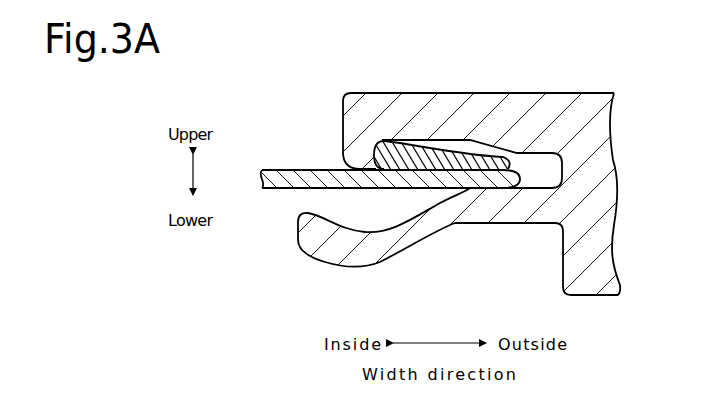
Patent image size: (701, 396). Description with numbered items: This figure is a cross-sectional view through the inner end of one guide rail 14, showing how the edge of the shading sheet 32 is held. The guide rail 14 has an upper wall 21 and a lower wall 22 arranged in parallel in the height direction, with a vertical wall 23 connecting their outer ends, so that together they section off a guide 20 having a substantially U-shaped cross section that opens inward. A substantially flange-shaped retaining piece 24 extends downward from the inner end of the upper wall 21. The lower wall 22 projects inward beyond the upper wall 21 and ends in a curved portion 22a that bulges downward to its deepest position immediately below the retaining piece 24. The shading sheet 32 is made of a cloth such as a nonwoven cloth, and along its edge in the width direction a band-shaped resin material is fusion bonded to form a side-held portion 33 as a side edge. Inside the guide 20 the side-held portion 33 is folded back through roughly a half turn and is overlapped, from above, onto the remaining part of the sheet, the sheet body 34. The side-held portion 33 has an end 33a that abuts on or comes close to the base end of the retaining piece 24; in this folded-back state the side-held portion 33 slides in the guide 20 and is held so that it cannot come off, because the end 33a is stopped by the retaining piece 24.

The guide rail 14 is at (569, 90).
The guide 20 is at (613, 128).
The upper wall 21 is at (524, 93).
The lower wall 22 is at (512, 224).
The curved portion 22a is at (357, 266).
The vertical wall 23 is at (613, 162).
The retaining piece 24 is at (350, 169).
The shading sheet 32 is at (404, 206).
The side-held portion 33 is at (455, 140).
The end of the side-held portion 33a is at (378, 141).
The sheet body 34 is at (277, 189).